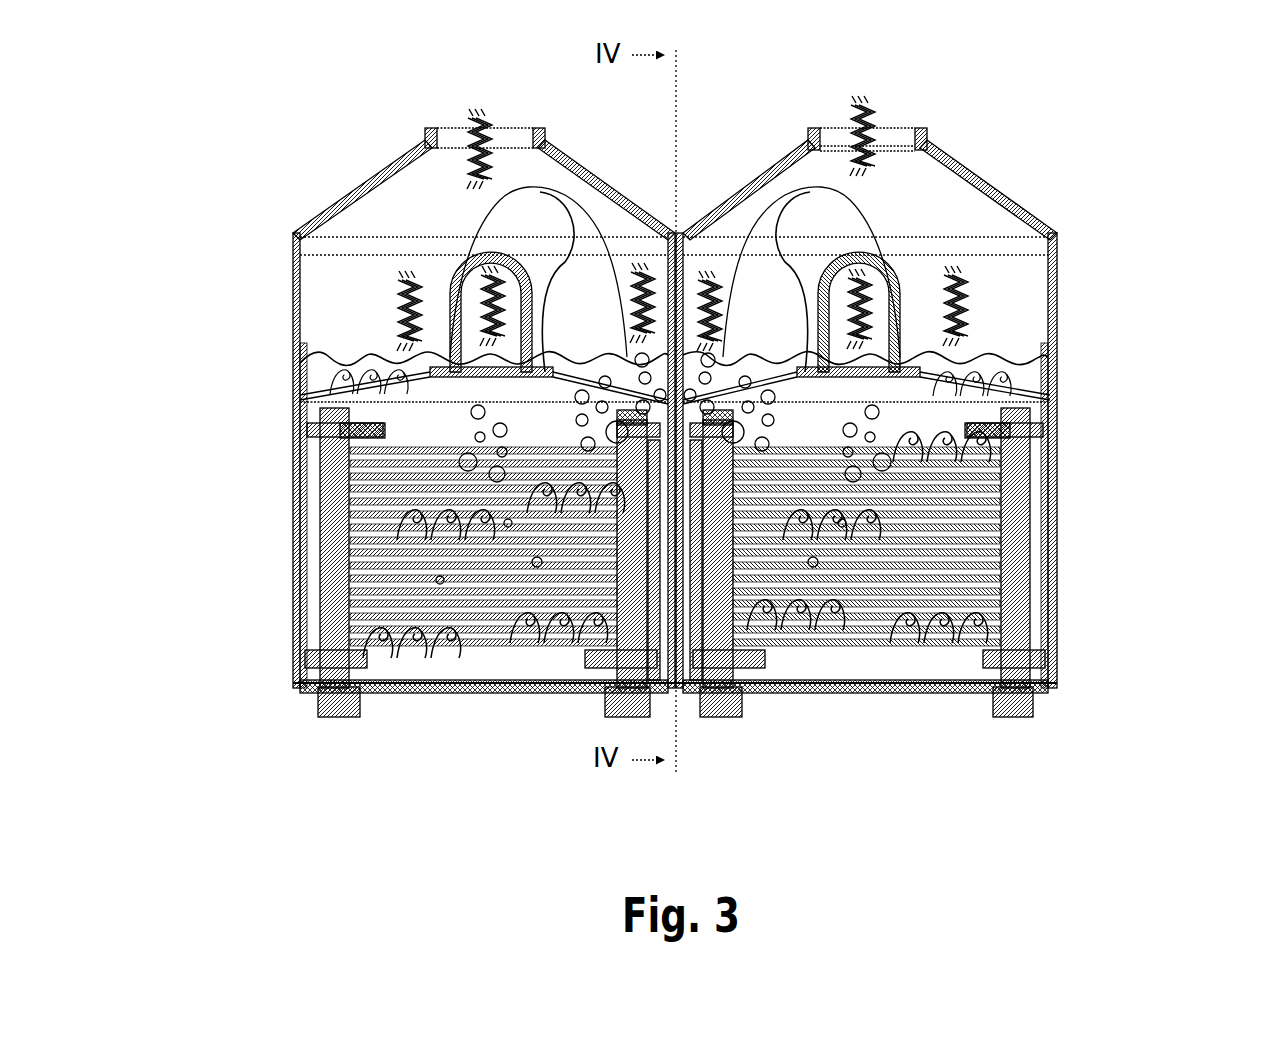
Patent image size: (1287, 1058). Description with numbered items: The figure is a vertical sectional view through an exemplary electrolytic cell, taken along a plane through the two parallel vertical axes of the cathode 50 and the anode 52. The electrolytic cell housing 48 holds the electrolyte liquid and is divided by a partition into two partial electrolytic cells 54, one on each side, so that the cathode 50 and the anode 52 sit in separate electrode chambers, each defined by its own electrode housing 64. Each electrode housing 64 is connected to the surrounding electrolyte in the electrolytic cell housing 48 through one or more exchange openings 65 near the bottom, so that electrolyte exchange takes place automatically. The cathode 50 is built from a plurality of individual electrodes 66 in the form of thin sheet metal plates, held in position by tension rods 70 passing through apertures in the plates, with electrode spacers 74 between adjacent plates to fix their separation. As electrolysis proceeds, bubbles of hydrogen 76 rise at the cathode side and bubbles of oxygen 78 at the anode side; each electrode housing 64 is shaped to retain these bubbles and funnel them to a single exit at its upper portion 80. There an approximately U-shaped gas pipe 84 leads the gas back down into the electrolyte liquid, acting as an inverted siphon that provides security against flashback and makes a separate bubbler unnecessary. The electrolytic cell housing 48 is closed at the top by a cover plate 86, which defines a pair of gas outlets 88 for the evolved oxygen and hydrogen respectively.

The electrolytic cell housing 48 is at (298, 343).
The cathode 50 is at (911, 736).
The anode 52 is at (431, 726).
The partial electrolytic cell 54 is at (339, 296).
The electrode housing 64 is at (322, 397).
The exchange opening 65 is at (842, 647).
The individual electrode 66 is at (1045, 527).
The tension rod 70 is at (1057, 418).
The electrode spacer 74 is at (944, 560).
The hydrogen gas bubbles 76 is at (862, 88).
The oxygen gas bubbles 78 is at (461, 93).
The upper portion of electrode housing 80 is at (1081, 212).
The gas pipe 84 is at (883, 238).
The cover plate 86 is at (392, 177).
The gas outlet 88 is at (908, 115).